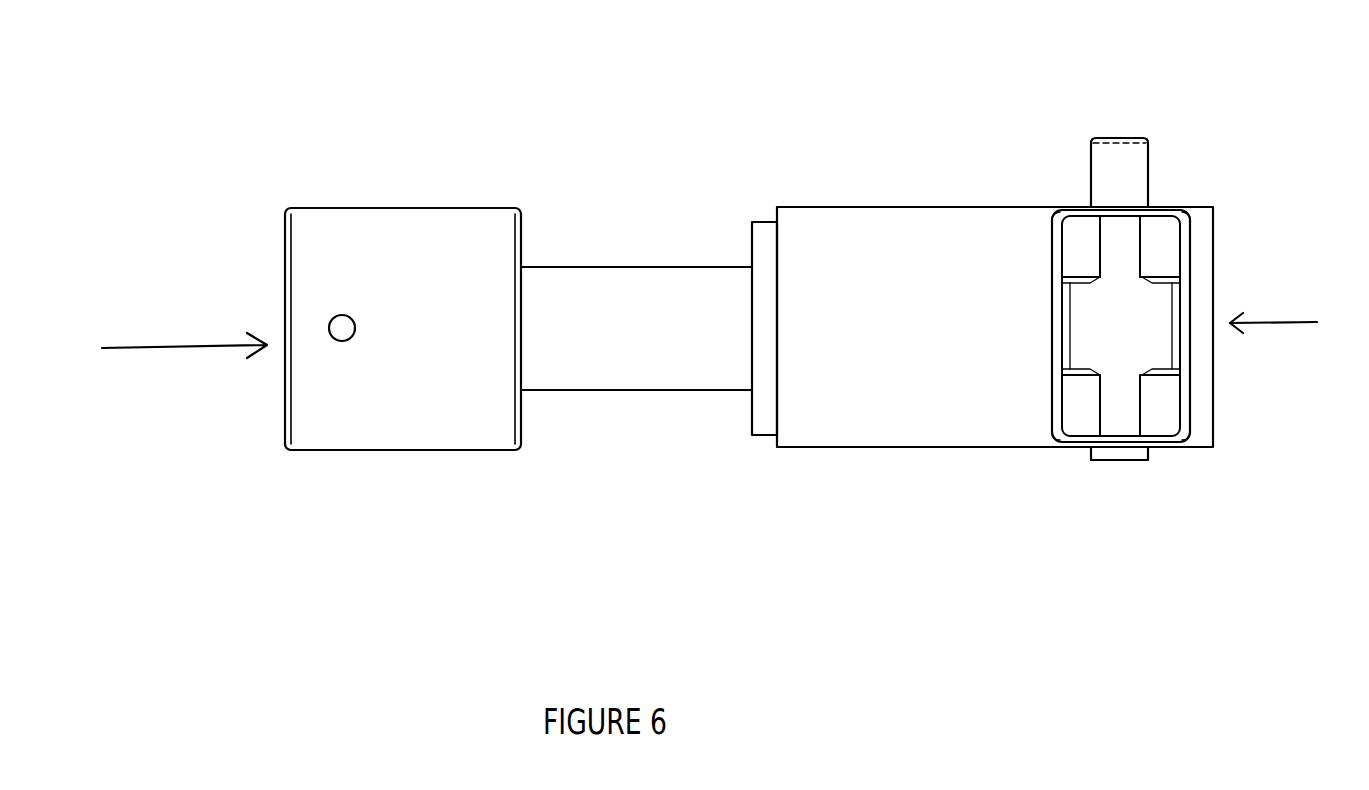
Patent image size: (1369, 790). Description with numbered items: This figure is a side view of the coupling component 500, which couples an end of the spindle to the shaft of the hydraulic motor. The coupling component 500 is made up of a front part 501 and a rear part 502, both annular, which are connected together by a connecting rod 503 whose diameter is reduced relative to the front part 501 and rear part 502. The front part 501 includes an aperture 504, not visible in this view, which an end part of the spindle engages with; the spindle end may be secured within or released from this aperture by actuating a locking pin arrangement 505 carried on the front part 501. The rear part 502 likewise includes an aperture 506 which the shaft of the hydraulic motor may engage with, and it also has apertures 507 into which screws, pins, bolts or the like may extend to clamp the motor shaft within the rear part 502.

The coupling component 500 is at (723, 127).
The front part 501 is at (905, 427).
The rear part 502 is at (370, 428).
The connecting rod 503 is at (617, 370).
The aperture 504 is at (1299, 328).
The locking pin arrangement 505 is at (1170, 153).
The aperture 506 is at (153, 343).
The apertures 507 is at (343, 322).